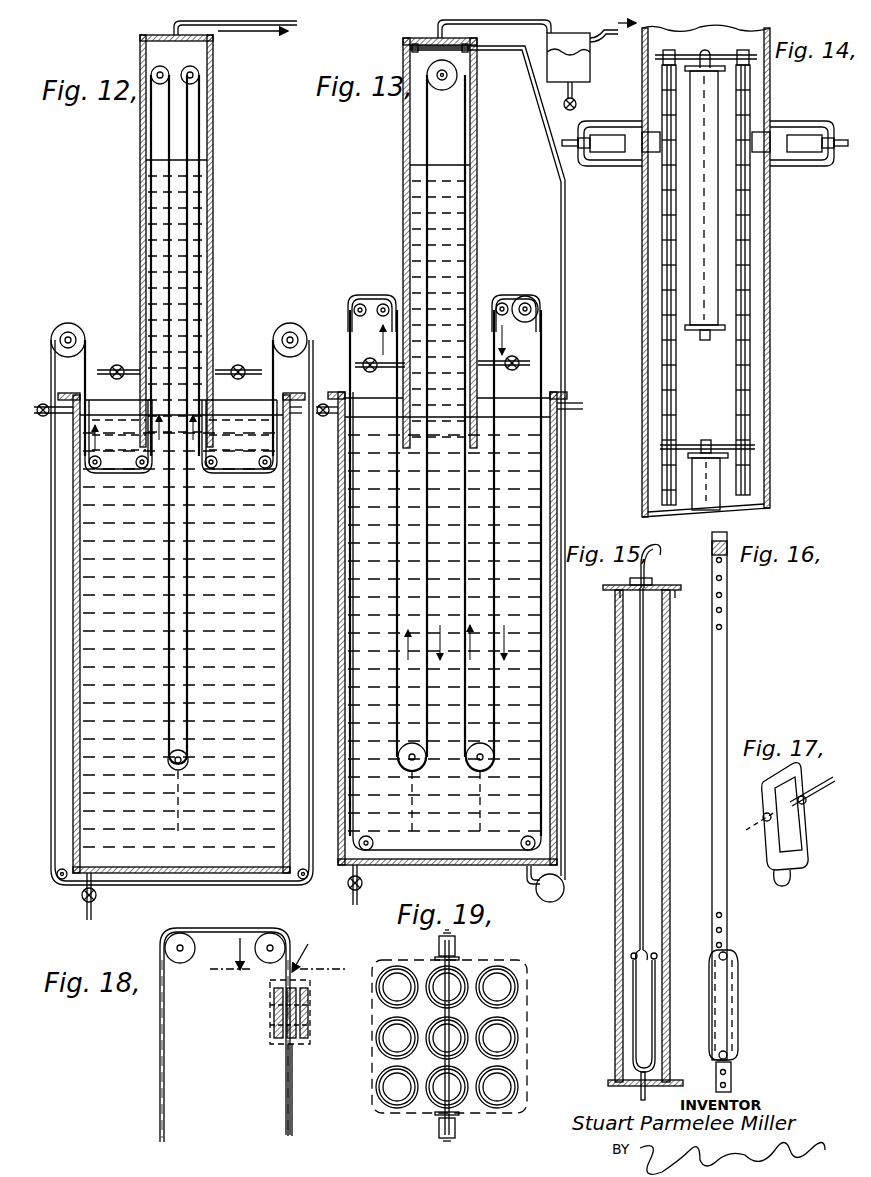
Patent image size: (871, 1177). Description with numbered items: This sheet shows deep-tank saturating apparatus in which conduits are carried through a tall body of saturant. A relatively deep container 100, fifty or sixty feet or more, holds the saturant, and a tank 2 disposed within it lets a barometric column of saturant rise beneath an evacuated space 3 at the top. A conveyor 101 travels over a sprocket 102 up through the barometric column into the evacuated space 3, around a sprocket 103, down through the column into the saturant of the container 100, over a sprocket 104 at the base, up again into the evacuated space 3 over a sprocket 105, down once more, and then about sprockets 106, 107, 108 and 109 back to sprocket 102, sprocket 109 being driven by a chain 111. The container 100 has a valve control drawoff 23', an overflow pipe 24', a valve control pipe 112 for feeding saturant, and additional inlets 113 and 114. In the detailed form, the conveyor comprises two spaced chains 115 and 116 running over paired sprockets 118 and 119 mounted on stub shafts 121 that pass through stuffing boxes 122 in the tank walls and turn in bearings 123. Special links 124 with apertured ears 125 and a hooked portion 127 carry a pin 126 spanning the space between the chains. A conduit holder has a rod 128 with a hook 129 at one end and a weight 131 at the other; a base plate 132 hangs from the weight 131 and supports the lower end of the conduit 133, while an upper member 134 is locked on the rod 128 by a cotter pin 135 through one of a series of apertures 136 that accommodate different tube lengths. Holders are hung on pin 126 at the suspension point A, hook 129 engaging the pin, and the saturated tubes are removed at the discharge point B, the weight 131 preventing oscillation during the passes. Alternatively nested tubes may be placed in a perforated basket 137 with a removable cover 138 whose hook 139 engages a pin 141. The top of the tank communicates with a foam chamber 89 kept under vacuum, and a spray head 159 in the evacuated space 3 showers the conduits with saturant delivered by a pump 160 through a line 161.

In FIG. 12, the tank 2 is at (214, 195).
In FIG. 12, the evacuated space 3 is at (196, 58).
In FIG. 12, the valve control drawoff 23' is at (109, 896).
In FIG. 13, the valve control drawoff 23' is at (373, 885).
In FIG. 12, the overflow pipe 24' is at (291, 392).
In FIG. 13, the foam chamber 89 is at (588, 70).
In FIG. 12, the container 100 is at (205, 873).
In FIG. 13, the container 100 is at (460, 866).
In FIG. 12, the conveyor 101 is at (272, 385).
In FIG. 12, the sprocket 102 is at (211, 469).
In FIG. 12, the sprocket 103 is at (200, 82).
In FIG. 12, the sprocket 104 is at (184, 763).
In FIG. 12, the sprocket 105 is at (152, 70).
In FIG. 12, the sprocket 106 is at (142, 469).
In FIG. 12, the sprocket 107 is at (86, 474).
In FIG. 12, the sprocket 108 is at (72, 330).
In FIG. 12, the sprocket 109 is at (280, 334).
In FIG. 12, the chain 111 is at (315, 255).
In FIG. 12, the valve control pipe 112 is at (45, 400).
In FIG. 12, the inlet 113 is at (117, 364).
In FIG. 12, the inlet 114 is at (237, 364).
In FIG. 14, the chain 115 is at (752, 402).
In FIG. 14, the chain 116 is at (675, 418).
In FIG. 14, the sprocket 118 is at (752, 104).
In FIG. 14, the sprocket 119 is at (661, 105).
In FIG. 13, the stub shaft 121 is at (541, 310).
In FIG. 14, the stub shaft 121 is at (606, 205).
In FIG. 14, the stuffing box 122 is at (648, 152).
In FIG. 13, the bearing 123 is at (512, 300).
In FIG. 14, the bearing 123 is at (576, 182).
In FIG. 17, the link 124 is at (768, 871).
In FIG. 17, the apertured ear 125 is at (762, 826).
In FIG. 17, the pin 126 is at (820, 792).
In FIG. 17, the hooked portion 127 is at (792, 874).
In FIG. 16, the rod 128 is at (722, 742).
In FIG. 14, the hook 129 is at (700, 57).
In FIG. 15, the hook 129 is at (651, 549).
In FIG. 16, the hook 129 is at (728, 541).
In FIG. 15, the weight 131 is at (645, 1018).
In FIG. 16, the weight 131 is at (739, 1016).
In FIG. 15, the base plate 132 is at (608, 1084).
In FIG. 14, the conduit 133 is at (718, 291).
In FIG. 15, the conduit 133 is at (668, 850).
In FIG. 14, the upper member 134 is at (704, 67).
In FIG. 15, the upper member 134 is at (653, 601).
In FIG. 14, the cotter pin 135 is at (708, 50).
In FIG. 15, the cotter pin 135 is at (652, 584).
In FIG. 16, the aperture 136 is at (722, 595).
In FIG. 18, the basket 137 is at (310, 1040).
In FIG. 19, the basket 137 is at (528, 1055).
In FIG. 18, the removable cover 138 is at (308, 982).
In FIG. 18, the hook 139 is at (292, 960).
In FIG. 18, the pin 141 is at (164, 1090).
In FIG. 19, the pin 141 is at (452, 1096).
In FIG. 13, the spray head 159 is at (436, 50).
In FIG. 13, the pump 160 is at (547, 898).
In FIG. 13, the line 161 is at (566, 752).
In FIG. 13, the suspension point A is at (512, 296).
In FIG. 13, the discharge point B is at (372, 296).